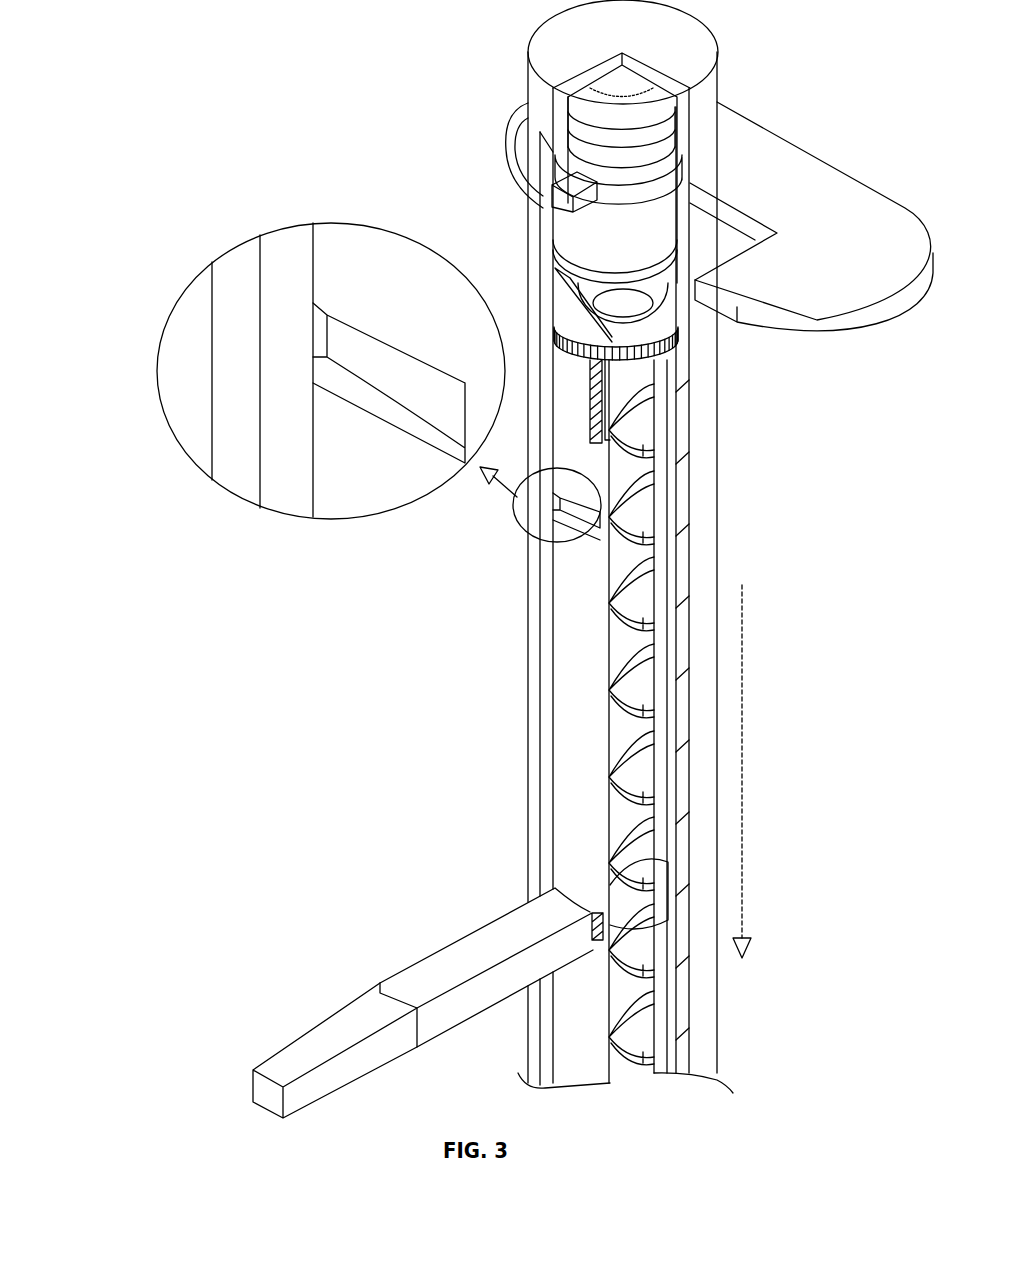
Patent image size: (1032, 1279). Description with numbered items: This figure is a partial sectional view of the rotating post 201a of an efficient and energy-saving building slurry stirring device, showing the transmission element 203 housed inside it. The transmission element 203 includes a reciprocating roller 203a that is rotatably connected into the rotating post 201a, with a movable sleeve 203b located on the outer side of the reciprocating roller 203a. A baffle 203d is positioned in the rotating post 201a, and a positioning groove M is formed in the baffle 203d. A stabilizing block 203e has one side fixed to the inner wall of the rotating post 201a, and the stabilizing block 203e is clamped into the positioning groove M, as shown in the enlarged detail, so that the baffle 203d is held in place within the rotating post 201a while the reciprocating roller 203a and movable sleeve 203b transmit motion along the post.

The rotating post 201a is at (245, 300).
The stabilizing block 203e is at (315, 338).
The positioning groove M is at (385, 385).
The baffle 203d is at (350, 450).
The reciprocating roller 203a is at (635, 775).
The movable sleeve 203b is at (635, 908).
The transmission element 203 is at (766, 803).